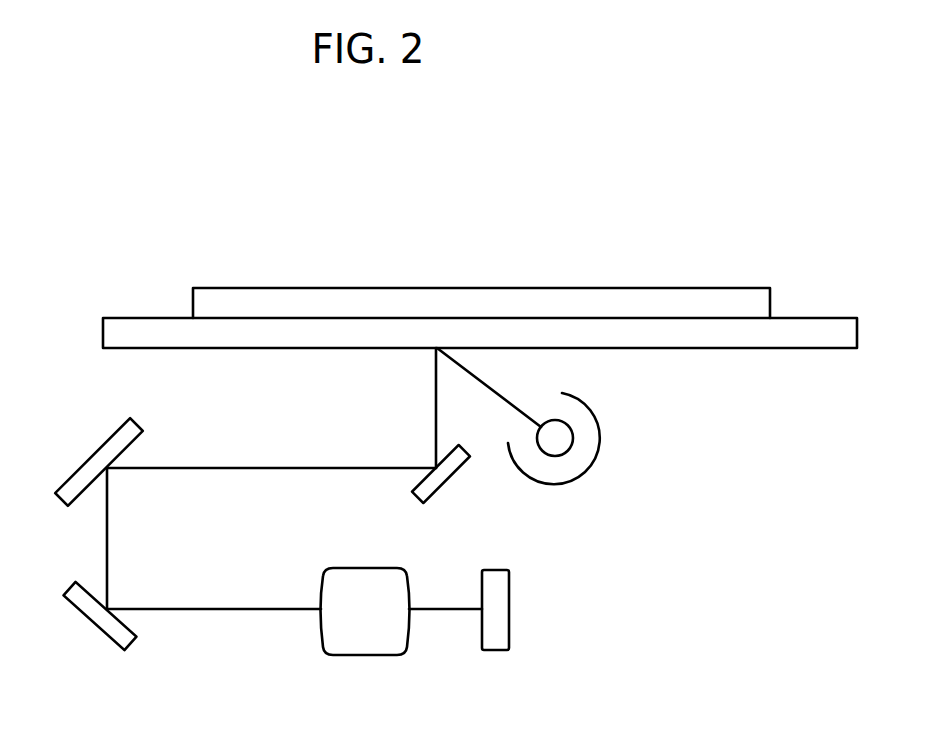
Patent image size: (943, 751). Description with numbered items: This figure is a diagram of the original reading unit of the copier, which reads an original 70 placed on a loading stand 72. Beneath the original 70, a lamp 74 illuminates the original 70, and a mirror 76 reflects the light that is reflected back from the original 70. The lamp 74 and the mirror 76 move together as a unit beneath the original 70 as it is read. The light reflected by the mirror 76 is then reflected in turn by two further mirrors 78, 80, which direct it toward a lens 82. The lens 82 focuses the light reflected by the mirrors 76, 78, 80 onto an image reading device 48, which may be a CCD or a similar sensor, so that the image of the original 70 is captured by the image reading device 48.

The image reading device 48 is at (509, 616).
The original 70 is at (492, 288).
The loading stand 72 is at (810, 317).
The lamp 74 is at (592, 438).
The mirror 76 is at (455, 476).
The mirror 78 is at (103, 440).
The mirror 80 is at (98, 632).
The lens 82 is at (343, 656).